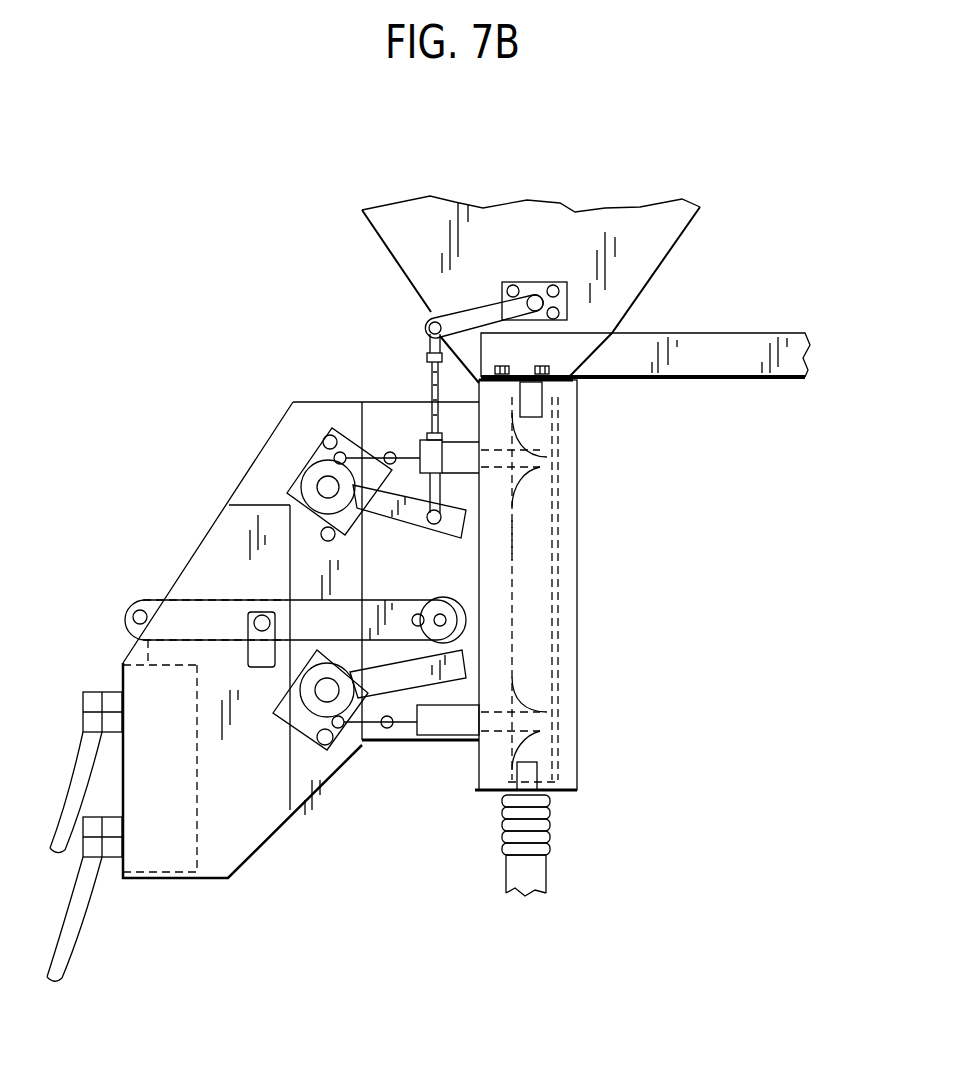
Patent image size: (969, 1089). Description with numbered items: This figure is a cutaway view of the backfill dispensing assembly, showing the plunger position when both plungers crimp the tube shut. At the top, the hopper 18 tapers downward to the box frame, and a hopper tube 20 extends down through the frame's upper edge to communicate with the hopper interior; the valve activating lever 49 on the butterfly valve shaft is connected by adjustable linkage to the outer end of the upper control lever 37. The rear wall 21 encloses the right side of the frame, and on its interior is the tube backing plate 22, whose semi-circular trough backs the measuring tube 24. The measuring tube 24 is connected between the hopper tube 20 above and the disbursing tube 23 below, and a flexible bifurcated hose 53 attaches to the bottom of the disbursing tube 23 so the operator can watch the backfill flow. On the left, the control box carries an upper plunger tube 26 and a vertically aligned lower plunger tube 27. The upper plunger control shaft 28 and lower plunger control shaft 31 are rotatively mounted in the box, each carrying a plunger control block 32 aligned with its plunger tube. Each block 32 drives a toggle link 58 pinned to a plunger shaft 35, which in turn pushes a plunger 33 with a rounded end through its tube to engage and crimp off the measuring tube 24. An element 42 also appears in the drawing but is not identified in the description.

The hopper 18 is at (640, 228).
The hopper tube 20 is at (530, 393).
The rear wall 21 is at (578, 593).
The tube backing plate 22 is at (563, 453).
The disbursing tube 23 is at (548, 803).
The measuring tube 24 is at (533, 522).
The upper plunger tube 26 is at (428, 437).
The lower plunger tube 27 is at (447, 745).
The upper plunger control shaft 28 is at (328, 487).
The lower plunger control shaft 31 is at (327, 690).
The plunger control block 32 is at (353, 443).
The plunger 33 is at (520, 720).
The plunger shaft 35 is at (506, 460).
The upper control lever 37 is at (427, 385).
The lever arm 42 is at (333, 623).
The valve activating lever 49 is at (428, 318).
The flexible bifurcated hose 53 is at (550, 847).
The toggle link 58 is at (372, 745).